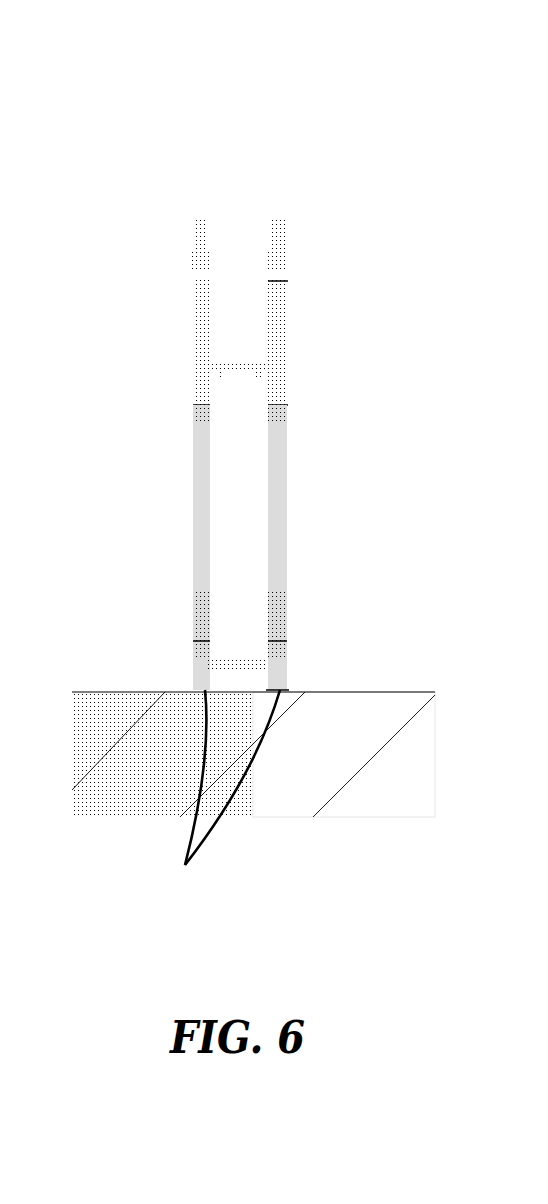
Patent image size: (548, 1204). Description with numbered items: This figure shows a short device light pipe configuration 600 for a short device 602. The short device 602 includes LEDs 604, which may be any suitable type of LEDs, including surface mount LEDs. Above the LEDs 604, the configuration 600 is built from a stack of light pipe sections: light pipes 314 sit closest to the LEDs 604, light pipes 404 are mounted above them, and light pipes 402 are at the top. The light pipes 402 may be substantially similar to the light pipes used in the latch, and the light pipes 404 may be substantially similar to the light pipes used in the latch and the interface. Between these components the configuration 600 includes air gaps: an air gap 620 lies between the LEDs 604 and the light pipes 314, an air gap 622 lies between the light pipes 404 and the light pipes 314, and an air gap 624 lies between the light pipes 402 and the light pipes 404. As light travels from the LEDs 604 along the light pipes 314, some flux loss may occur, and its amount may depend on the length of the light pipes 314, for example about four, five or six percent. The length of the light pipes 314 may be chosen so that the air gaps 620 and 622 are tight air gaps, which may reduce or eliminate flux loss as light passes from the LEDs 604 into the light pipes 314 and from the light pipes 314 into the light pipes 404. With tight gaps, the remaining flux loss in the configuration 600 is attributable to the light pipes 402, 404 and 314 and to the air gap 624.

The short device light pipe configuration 600 is at (423, 98).
The light pipes 402 is at (158, 239).
The air gap 624 is at (298, 278).
The light pipes 404 is at (170, 346).
The air gap 622 is at (298, 403).
The light pipes 314 is at (170, 516).
The air gap 620 is at (305, 687).
The short device 602 is at (297, 787).
The LEDs 604 is at (225, 796).